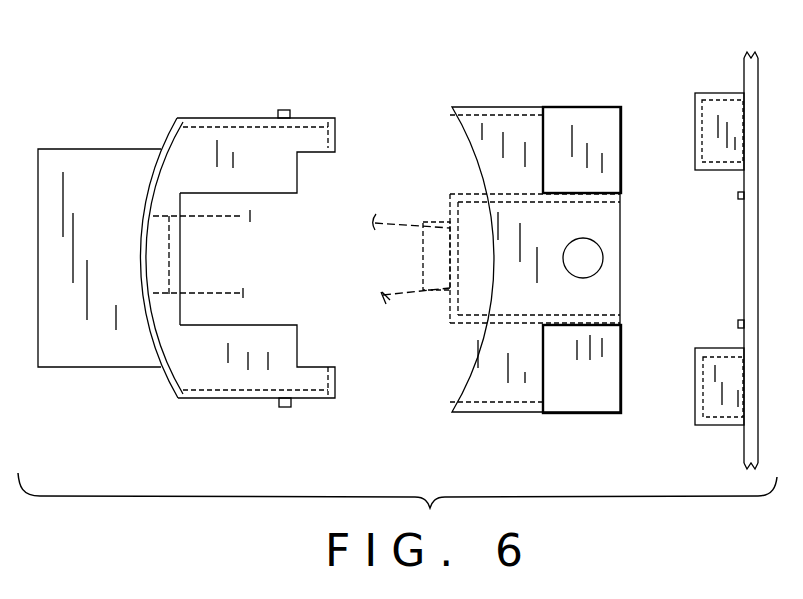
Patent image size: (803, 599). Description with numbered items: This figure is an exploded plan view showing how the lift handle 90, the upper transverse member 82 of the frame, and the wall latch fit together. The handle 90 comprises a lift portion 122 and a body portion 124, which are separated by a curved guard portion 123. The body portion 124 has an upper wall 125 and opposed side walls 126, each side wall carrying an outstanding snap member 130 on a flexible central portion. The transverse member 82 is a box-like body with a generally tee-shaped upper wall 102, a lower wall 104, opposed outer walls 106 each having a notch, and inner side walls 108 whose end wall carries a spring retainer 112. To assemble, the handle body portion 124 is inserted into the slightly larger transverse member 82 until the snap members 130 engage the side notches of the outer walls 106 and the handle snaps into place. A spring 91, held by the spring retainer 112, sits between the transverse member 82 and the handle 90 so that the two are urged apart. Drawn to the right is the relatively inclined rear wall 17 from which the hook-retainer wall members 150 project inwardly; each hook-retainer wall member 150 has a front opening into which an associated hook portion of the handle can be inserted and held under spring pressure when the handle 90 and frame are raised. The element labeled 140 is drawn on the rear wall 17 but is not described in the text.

The handle 90 is at (135, 104).
The lift portion 122 is at (119, 209).
The curved guard portion 123 is at (150, 335).
The body portion 124 is at (207, 118).
The upper wall 125 is at (281, 179).
The side walls 126 is at (187, 437).
The snap member 130 is at (283, 110).
The spring 91 is at (223, 218).
The upper transverse member 82 is at (522, 92).
The outer walls 106 is at (495, 106).
The upper wall 102 is at (481, 176).
The lower wall 104 is at (601, 396).
The inner side walls 108 is at (508, 193).
The spring retainer 112 is at (438, 295).
The rear wall 17 is at (744, 254).
The hook-retainer wall member 150 is at (723, 93).
The rail stud 140 is at (738, 198).